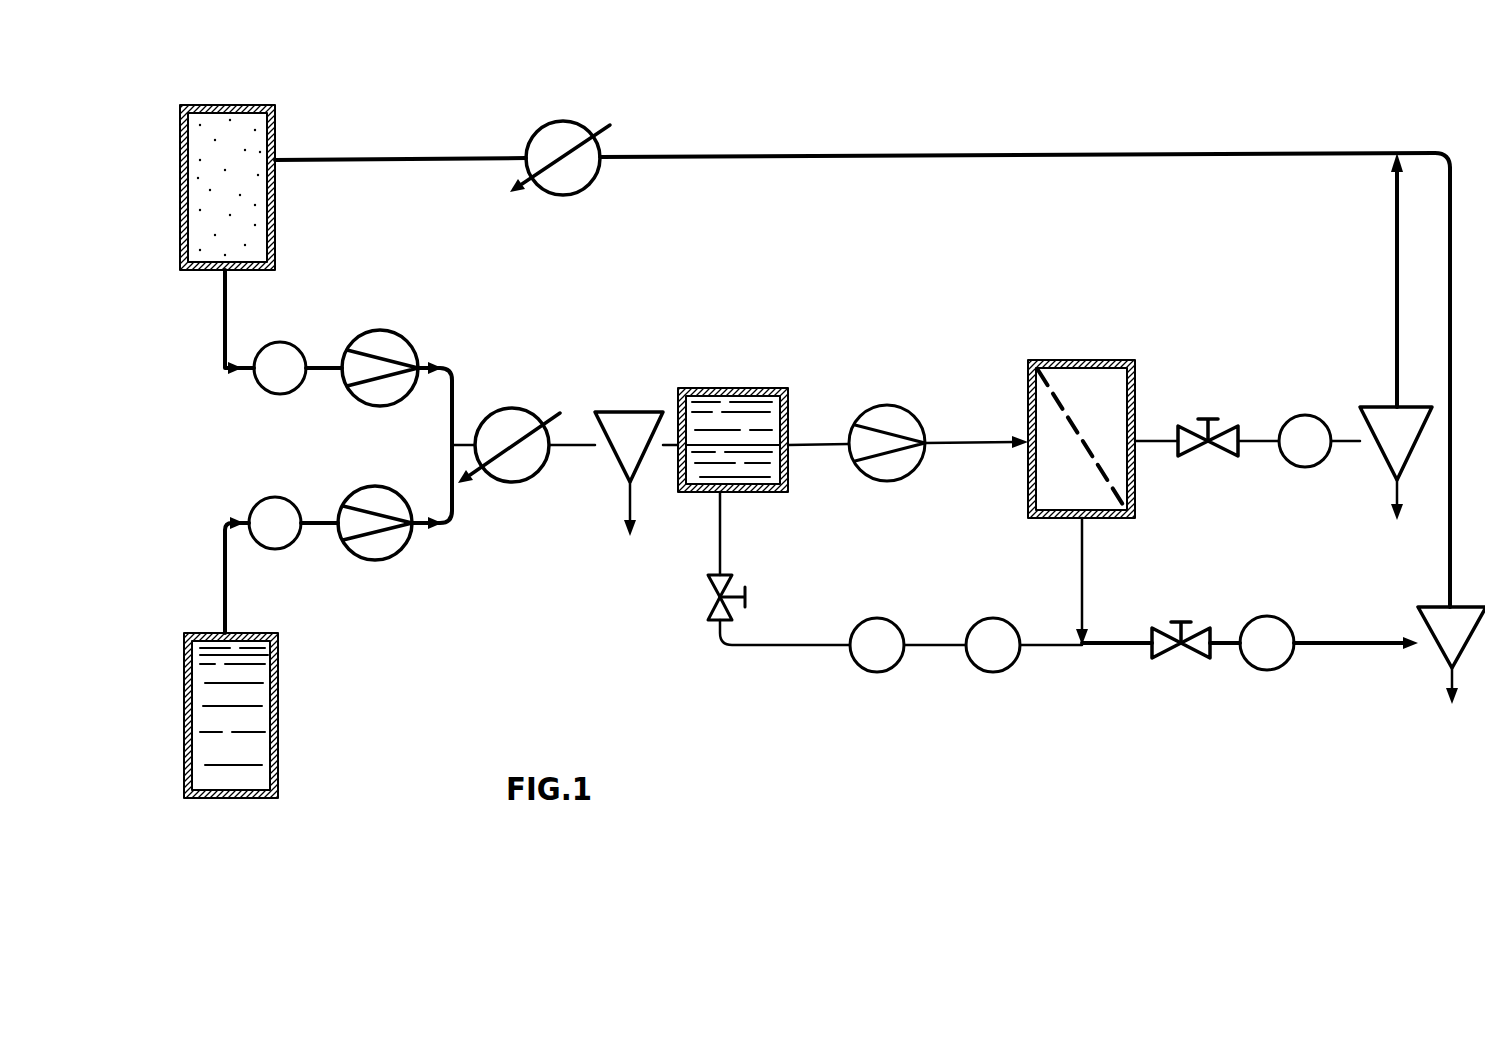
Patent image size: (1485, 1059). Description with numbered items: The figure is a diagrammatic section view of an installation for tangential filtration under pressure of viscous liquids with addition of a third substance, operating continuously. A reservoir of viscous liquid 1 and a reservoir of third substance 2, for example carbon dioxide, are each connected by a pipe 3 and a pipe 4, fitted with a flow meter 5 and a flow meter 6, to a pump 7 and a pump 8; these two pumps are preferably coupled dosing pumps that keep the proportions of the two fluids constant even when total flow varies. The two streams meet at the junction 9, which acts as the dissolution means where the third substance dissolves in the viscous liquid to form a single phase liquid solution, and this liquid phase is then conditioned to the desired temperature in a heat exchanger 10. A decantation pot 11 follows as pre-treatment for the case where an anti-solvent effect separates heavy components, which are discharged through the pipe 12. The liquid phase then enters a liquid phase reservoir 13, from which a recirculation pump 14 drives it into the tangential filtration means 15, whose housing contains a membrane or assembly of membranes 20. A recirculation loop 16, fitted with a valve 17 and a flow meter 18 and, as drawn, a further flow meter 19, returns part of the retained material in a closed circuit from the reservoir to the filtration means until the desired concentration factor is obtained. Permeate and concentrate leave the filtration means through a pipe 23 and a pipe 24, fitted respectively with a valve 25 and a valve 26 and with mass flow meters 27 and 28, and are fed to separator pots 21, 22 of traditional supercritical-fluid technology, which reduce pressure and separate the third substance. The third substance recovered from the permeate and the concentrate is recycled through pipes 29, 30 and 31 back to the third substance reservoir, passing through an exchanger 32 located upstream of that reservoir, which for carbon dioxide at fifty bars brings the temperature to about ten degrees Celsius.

The reservoir of viscous liquid 1 is at (262, 712).
The reservoir of third substance 2 is at (233, 105).
The pipe 3 is at (223, 593).
The pipe 4 is at (225, 322).
The flow meter 5 is at (277, 497).
The flow meter 6 is at (262, 390).
The pump 7 is at (378, 560).
The pump 8 is at (378, 330).
The junction 9 is at (463, 440).
The heat exchanger 10 is at (507, 475).
The decantation pot 11 is at (612, 412).
The pipe 12 is at (628, 500).
The liquid phase reservoir 13 is at (760, 397).
The recirculation pump 14 is at (905, 406).
The tangential filtration means 15 is at (1042, 470).
The recirculation loop 16 is at (730, 645).
The valve 17 is at (708, 597).
The flow meter 18 is at (985, 663).
The flow meter 19 is at (862, 668).
The membrane 20 is at (1055, 385).
The separator pot 21 is at (1382, 415).
The separator pot 22 is at (1440, 650).
The pipe 23 is at (1148, 438).
The pipe 24 is at (1108, 643).
The valve 25 is at (1218, 455).
The valve 26 is at (1195, 652).
The mass flow meter 27 is at (1292, 455).
The mass flow meter 28 is at (1265, 668).
The pipe 29 is at (1395, 280).
The pipe 30 is at (1445, 530).
The pipe 31 is at (924, 155).
The exchanger 32 is at (548, 124).